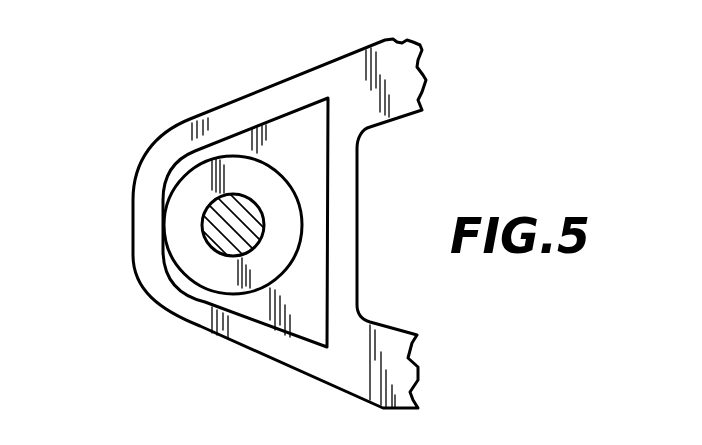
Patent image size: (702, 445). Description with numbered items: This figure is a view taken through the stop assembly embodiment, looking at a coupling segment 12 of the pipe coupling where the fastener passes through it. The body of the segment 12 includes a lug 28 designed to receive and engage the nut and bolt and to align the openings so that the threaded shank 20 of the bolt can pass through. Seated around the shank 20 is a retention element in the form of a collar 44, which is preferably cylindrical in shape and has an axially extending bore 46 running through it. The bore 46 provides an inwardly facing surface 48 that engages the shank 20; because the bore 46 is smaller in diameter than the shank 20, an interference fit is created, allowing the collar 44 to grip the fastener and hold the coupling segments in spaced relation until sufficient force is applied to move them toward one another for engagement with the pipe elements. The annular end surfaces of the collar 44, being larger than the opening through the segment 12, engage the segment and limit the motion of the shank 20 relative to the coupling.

The coupling segment 12 is at (407, 43).
The lug 28 is at (257, 343).
The collar 44 is at (183, 218).
The threaded shank 20 is at (225, 248).
The inwardly facing surface 48 is at (224, 195).
The bore 46 is at (230, 256).